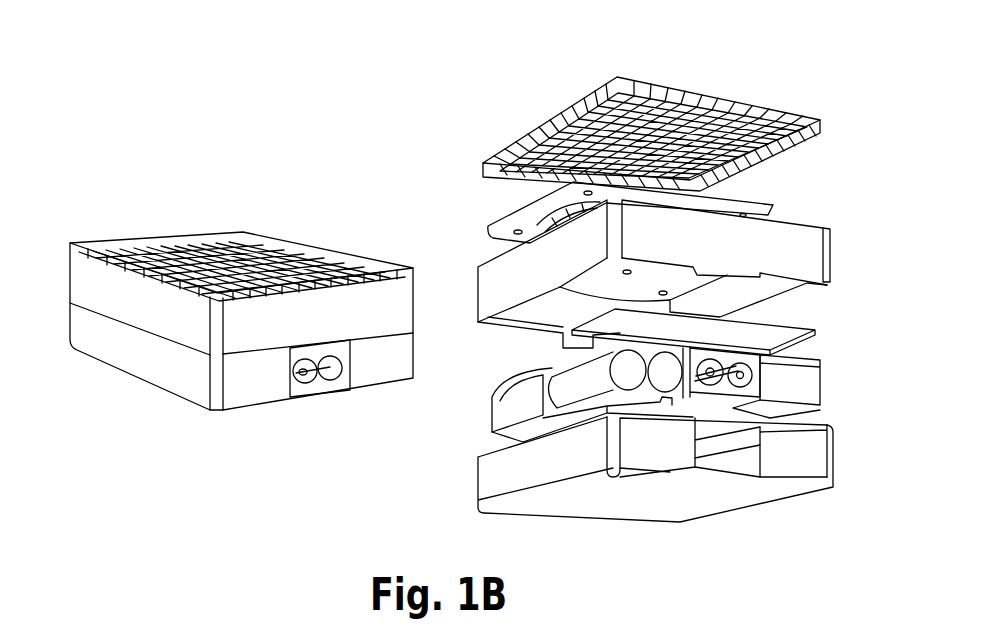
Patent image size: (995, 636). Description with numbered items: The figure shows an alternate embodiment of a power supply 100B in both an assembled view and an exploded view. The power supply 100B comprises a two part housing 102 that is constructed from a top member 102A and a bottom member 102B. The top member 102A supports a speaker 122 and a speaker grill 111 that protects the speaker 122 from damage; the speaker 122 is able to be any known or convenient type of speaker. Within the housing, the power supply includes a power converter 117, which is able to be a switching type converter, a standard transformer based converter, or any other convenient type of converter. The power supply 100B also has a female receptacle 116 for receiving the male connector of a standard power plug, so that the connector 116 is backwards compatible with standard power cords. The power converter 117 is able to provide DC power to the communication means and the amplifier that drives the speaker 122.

The power supply 100B is at (104, 168).
The two part housing 102 is at (82, 377).
The top member 102A is at (818, 223).
The bottom member 102B is at (767, 493).
The speaker grill 111 is at (717, 90).
The female receptacle 116 is at (760, 371).
The power converter 117 is at (580, 378).
The speaker 122 is at (488, 228).